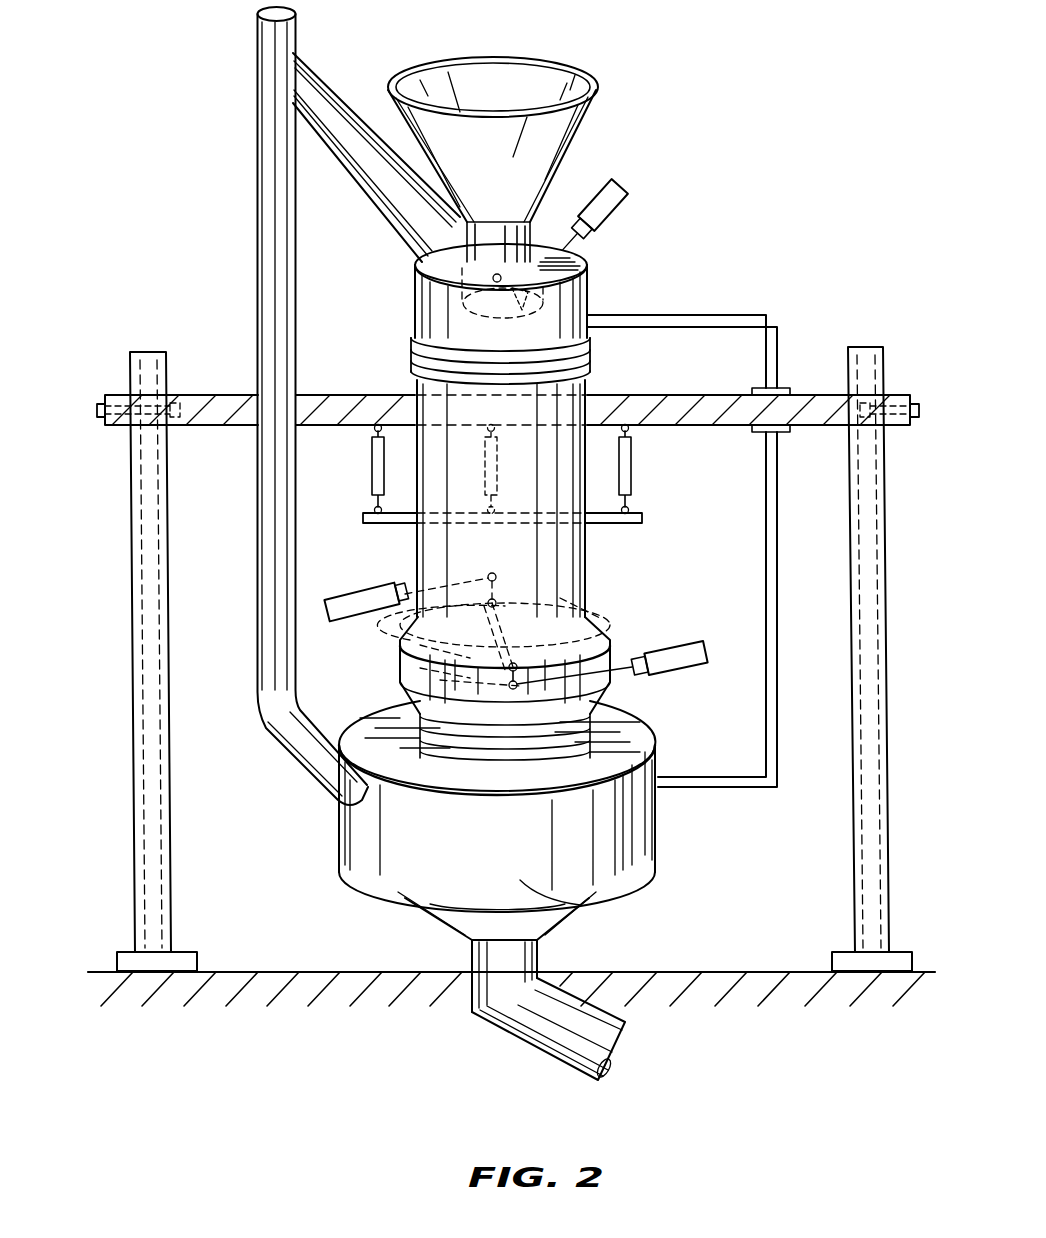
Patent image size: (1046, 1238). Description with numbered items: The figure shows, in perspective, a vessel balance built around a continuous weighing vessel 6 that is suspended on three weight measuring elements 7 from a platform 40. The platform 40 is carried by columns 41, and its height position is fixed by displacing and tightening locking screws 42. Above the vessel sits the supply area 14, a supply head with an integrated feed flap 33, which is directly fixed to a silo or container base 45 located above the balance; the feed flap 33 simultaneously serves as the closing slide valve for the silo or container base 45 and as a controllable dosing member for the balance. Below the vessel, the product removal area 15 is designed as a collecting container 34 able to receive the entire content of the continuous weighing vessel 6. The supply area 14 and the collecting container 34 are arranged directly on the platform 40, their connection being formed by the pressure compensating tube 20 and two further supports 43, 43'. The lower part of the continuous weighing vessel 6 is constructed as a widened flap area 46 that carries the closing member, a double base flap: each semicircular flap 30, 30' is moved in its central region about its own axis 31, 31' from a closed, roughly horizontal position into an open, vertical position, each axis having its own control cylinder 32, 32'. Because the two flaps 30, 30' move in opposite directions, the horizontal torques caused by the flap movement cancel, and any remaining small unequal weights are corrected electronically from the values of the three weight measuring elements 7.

The continuous weighing vessel 6 is at (455, 445).
The weight measuring elements 7 is at (372, 468).
The supply area 14 is at (580, 292).
The product removal area 15 is at (565, 895).
The pressure compensating tube 20 is at (258, 202).
The flap 30 is at (536, 678).
The flap 30' is at (423, 629).
The axis 31 is at (536, 613).
The axis 31' is at (435, 682).
The control cylinder 32 is at (618, 672).
The control cylinder 32' is at (410, 580).
The feed flap 33 is at (624, 210).
The collecting container 34 is at (656, 822).
The platform 40 is at (205, 398).
The columns 41 is at (150, 548).
The locking screws 42 is at (100, 405).
The support 43 is at (713, 551).
The support 43' is at (805, 605).
The silo or container base 45 is at (575, 150).
The widened flap area 46 is at (606, 698).